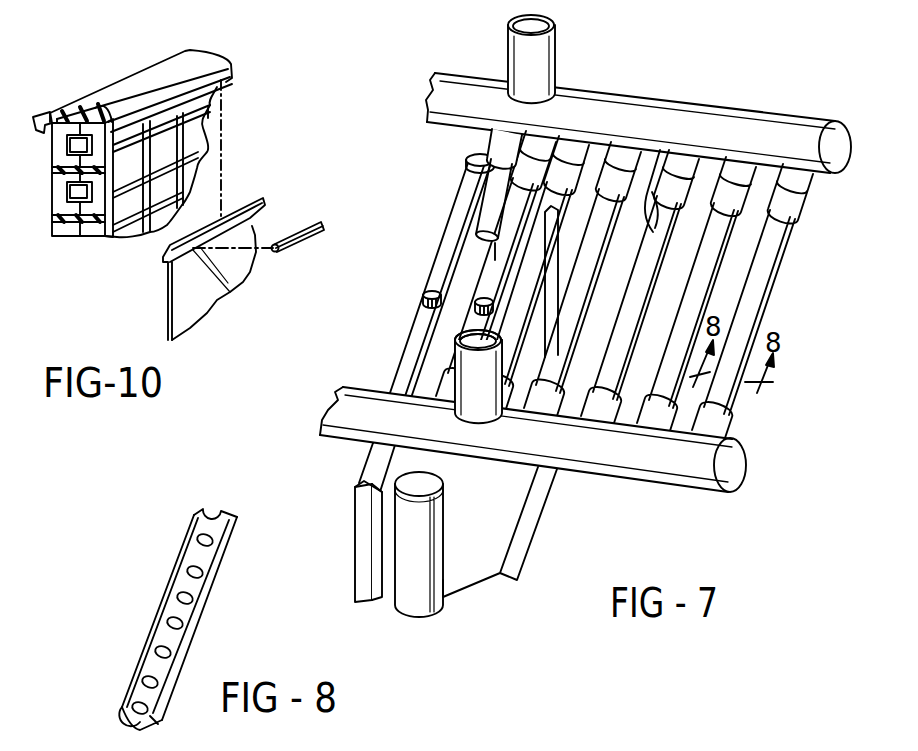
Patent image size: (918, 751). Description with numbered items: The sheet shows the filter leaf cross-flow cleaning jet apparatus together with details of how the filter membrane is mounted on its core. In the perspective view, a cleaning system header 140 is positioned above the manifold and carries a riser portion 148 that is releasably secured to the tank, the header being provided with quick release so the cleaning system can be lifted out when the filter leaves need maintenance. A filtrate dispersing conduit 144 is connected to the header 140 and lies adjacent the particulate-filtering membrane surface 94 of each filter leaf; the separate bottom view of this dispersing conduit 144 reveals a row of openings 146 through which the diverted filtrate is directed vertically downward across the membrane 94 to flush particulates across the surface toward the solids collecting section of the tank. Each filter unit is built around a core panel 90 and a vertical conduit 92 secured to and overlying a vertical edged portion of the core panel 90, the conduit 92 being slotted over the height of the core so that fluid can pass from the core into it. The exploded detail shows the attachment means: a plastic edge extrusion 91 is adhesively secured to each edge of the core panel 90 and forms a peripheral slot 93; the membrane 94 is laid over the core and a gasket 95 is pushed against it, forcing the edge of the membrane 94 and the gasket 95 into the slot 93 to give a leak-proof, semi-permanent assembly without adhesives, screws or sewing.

In FIG. 10, the core panel 90 is at (67, 207).
In FIG. 10, the plastic edge extrusion 91 is at (127, 88).
In FIG. 10, the peripheral slot 93 is at (34, 132).
In FIG. 10, the membrane 94 is at (185, 286).
In FIG. 7, the membrane 94 is at (357, 514).
In FIG. 10, the gasket 95 is at (318, 208).
In FIG. 7, the conduit 92 is at (480, 157).
In FIG. 7, the cleaning system header 140 is at (380, 392).
In FIG. 7, the filtrate dispersing conduit 144 is at (660, 150).
In FIG. 8, the filtrate dispersing conduit 144 is at (149, 619).
In FIG. 8, the opening 146 is at (172, 622).
In FIG. 7, the riser portion 148 is at (557, 62).